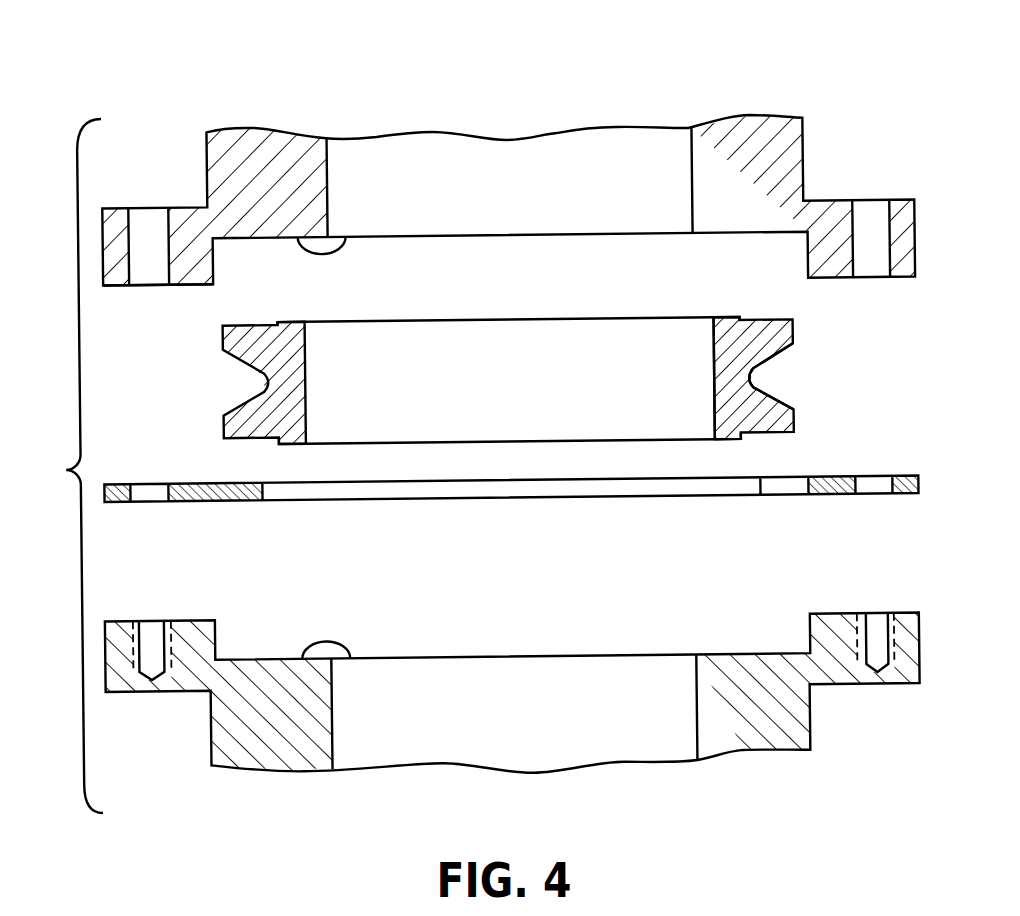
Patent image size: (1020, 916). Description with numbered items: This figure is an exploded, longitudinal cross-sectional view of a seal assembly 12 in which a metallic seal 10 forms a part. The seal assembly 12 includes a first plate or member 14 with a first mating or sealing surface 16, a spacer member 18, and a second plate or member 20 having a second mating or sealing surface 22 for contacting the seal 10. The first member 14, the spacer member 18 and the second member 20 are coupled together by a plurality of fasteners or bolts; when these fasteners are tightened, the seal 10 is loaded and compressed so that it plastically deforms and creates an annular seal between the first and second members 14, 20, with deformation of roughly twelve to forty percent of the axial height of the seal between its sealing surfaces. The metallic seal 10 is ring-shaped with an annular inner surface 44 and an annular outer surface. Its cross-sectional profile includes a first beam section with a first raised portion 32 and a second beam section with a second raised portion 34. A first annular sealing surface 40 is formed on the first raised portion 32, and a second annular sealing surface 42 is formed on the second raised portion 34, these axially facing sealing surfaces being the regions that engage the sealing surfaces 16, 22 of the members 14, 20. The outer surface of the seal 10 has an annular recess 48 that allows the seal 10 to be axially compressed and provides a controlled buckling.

The metallic seal 10 is at (841, 347).
The seal assembly 12 is at (831, 97).
The first plate or member 14 is at (188, 702).
The first mating or sealing surface 16 is at (348, 662).
The spacer member 18 is at (186, 509).
The second plate or member 20 is at (187, 294).
The second mating or sealing surface 22 is at (360, 238).
The first raised portion 32 is at (290, 449).
The second raised portion 34 is at (289, 316).
The first annular sealing surface 40 is at (740, 441).
The second annular sealing surface 42 is at (724, 316).
The annular inner surface 44 is at (713, 390).
The annular recess 48 is at (775, 377).